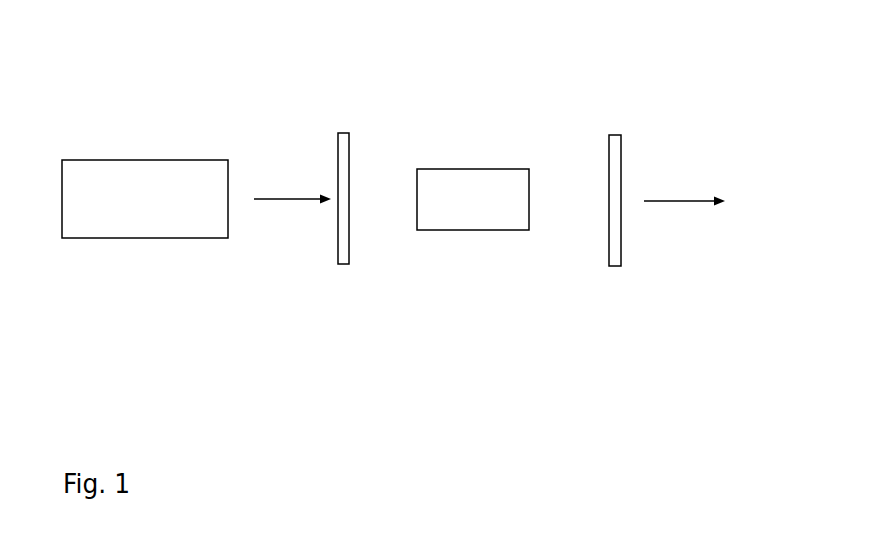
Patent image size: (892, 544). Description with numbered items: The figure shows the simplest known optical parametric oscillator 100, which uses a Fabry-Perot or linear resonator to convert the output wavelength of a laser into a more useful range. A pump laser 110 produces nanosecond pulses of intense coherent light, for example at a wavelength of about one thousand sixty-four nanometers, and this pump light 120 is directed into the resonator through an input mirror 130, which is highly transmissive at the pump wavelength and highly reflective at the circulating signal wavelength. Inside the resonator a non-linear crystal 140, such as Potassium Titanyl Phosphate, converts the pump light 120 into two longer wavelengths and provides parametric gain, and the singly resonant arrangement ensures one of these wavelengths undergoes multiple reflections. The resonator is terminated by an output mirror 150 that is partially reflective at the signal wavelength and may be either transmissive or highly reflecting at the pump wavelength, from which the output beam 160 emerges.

The optical parametric oscillator 100 is at (125, 114).
The pump laser 110 is at (144, 252).
The pump light 120 is at (276, 178).
The input mirror 130 is at (345, 278).
The non-linear crystal 140 is at (476, 245).
The output mirror 150 is at (620, 276).
The output beam 160 is at (674, 182).